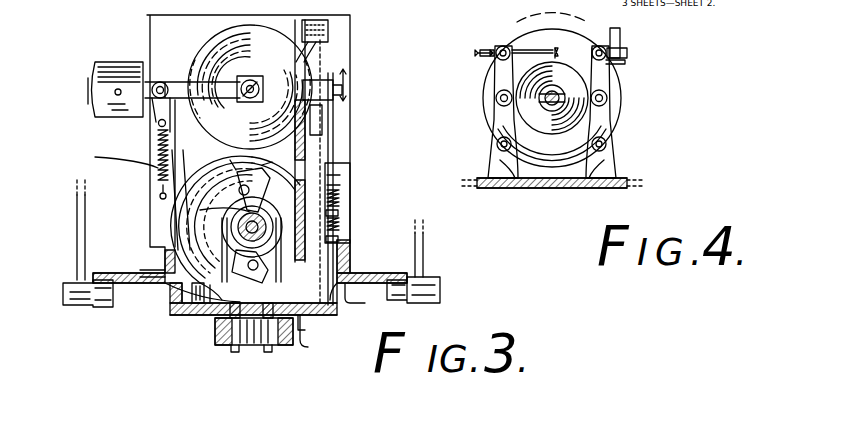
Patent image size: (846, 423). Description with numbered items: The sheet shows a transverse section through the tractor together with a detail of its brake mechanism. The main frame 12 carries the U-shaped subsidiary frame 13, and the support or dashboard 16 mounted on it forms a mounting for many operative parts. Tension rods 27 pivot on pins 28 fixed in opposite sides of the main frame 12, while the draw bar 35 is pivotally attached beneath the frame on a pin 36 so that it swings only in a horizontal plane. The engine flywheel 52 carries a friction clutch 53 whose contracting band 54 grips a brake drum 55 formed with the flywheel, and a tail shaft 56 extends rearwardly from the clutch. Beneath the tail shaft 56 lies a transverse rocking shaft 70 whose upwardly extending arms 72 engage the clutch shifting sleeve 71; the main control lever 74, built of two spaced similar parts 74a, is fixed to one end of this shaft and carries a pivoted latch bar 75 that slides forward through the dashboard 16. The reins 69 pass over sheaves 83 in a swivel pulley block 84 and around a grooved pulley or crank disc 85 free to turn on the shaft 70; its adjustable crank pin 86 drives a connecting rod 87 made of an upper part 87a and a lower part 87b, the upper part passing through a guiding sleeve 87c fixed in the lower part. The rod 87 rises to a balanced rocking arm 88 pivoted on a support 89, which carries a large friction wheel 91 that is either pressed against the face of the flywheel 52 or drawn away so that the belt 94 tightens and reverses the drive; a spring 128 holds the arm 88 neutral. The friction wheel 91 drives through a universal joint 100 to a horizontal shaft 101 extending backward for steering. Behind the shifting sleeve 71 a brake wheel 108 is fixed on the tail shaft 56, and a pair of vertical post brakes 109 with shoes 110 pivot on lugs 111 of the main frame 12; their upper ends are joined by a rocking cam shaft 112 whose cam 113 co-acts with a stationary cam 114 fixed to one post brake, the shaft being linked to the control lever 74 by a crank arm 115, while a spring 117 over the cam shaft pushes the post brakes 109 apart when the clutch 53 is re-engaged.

In FIG. 3, the main frame 12 is at (185, 300).
In FIG. 4, the main frame 12 is at (565, 188).
In FIG. 3, the subsidiary frame 13 is at (345, 256).
In FIG. 3, the support or dashboard 16 is at (236, 87).
In FIG. 3, the tension rod 27 is at (77, 238).
In FIG. 3, the pin 28 is at (62, 294).
In FIG. 3, the draw bar 35 is at (293, 344).
In FIG. 3, the pin 36 is at (245, 352).
In FIG. 3, the flywheel 52 is at (250, 227).
In FIG. 4, the flywheel 52 is at (590, 83).
In FIG. 3, the friction clutch 53 is at (200, 208).
In FIG. 3, the contracting band 54 is at (162, 257).
In FIG. 3, the brake drum 55 is at (205, 285).
In FIG. 4, the brake drum 55 is at (607, 146).
In FIG. 3, the tail shaft 56 is at (222, 240).
In FIG. 4, the tail shaft 56 is at (542, 98).
In FIG. 3, the reins 69 is at (340, 172).
In FIG. 3, the transverse rocking shaft 70 is at (205, 310).
In FIG. 3, the clutch shifting sleeve 71 is at (250, 172).
In FIG. 3, the upwardly extending arms 72 is at (212, 310).
In FIG. 3, the main control lever 74 is at (322, 150).
In FIG. 3, the lever parts 74a is at (308, 347).
In FIG. 3, the latch bar 75 is at (303, 125).
In FIG. 3, the sheaves 83 is at (328, 28).
In FIG. 3, the swivel pulley block 84 is at (322, 50).
In FIG. 3, the grooved pulley or crank disc 85 is at (345, 290).
In FIG. 3, the crank pin 86 is at (340, 287).
In FIG. 3, the connecting rod 87 is at (333, 135).
In FIG. 3, the upper rod part 87a is at (322, 165).
In FIG. 3, the lower rod part 87b is at (338, 228).
In FIG. 3, the guiding sleeve 87c is at (338, 192).
In FIG. 3, the balanced rocking arm 88 is at (218, 83).
In FIG. 3, the support 89 is at (150, 212).
In FIG. 3, the friction wheel 91 is at (215, 40).
In FIG. 3, the belt 94 is at (160, 150).
In FIG. 3, the universal joint 100 is at (230, 100).
In FIG. 3, the horizontal shaft 101 is at (300, 72).
In FIG. 4, the brake wheel 108 is at (590, 130).
In FIG. 4, the post brakes 109 is at (495, 70).
In FIG. 4, the brake shoes 110 is at (495, 98).
In FIG. 4, the lugs 111 is at (495, 164).
In FIG. 4, the rocking cam shaft 112 is at (530, 52).
In FIG. 4, the cam 113 is at (622, 52).
In FIG. 4, the stationary cam 114 is at (612, 48).
In FIG. 4, the crank arm 115 is at (622, 44).
In FIG. 4, the spring 117 is at (568, 45).
In FIG. 3, the spring 128 is at (112, 156).